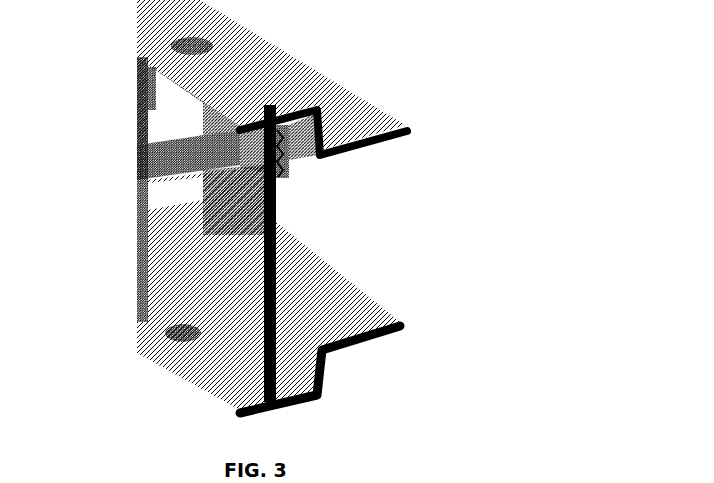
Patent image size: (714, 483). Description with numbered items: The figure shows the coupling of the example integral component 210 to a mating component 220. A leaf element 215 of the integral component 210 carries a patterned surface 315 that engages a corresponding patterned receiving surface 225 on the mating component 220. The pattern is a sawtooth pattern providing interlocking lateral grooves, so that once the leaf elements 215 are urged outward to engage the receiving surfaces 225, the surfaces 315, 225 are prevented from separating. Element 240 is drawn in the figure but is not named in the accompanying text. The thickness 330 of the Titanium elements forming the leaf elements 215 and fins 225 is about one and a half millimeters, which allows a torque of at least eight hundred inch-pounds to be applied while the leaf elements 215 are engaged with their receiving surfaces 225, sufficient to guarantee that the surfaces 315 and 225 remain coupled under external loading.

The integral component 210 is at (357, 337).
The leaf element 215 is at (237, 272).
The mating component 220 is at (337, 85).
The patterned receiving surface 225 is at (289, 162).
The cross member 240 is at (153, 150).
The patterned surface 315 is at (263, 165).
The thickness 330 is at (172, 232).